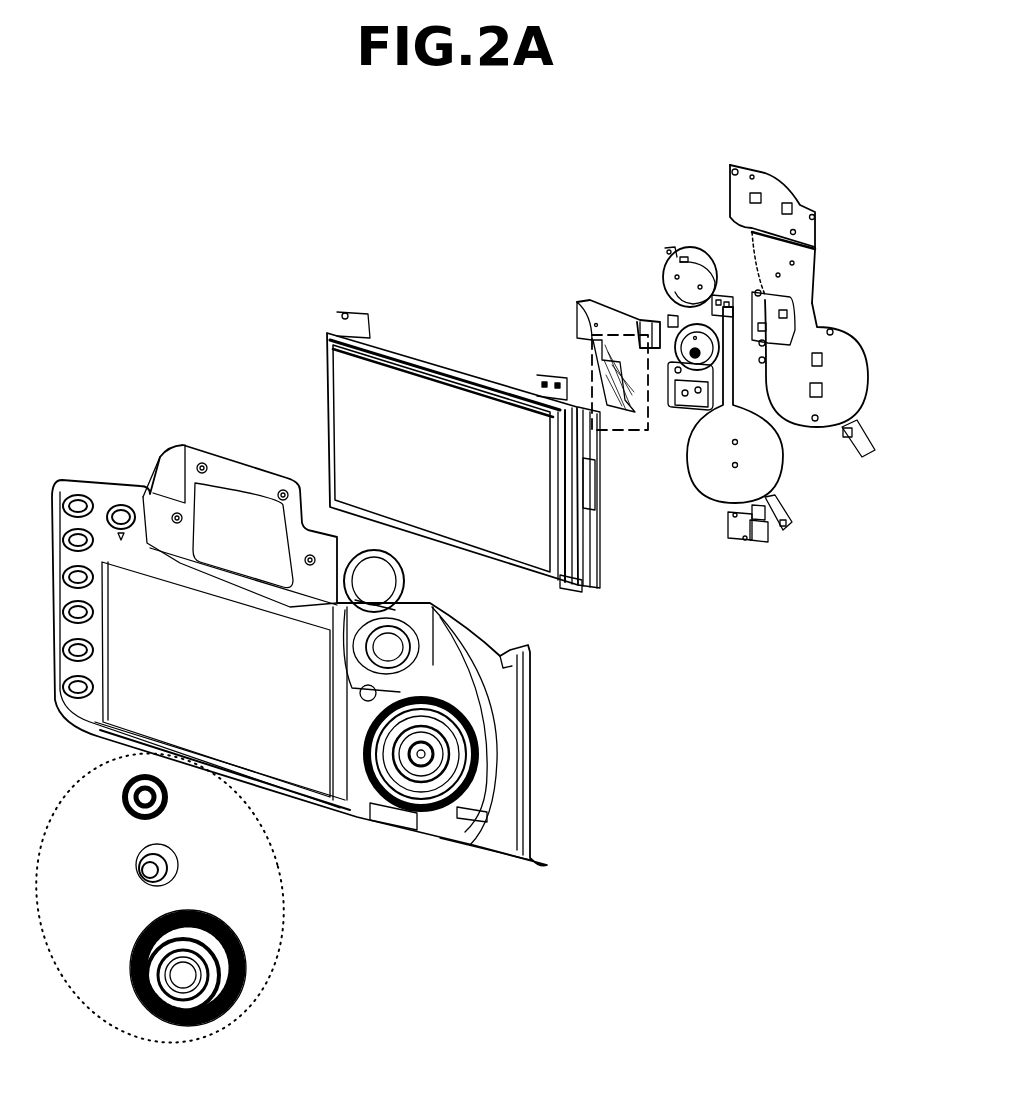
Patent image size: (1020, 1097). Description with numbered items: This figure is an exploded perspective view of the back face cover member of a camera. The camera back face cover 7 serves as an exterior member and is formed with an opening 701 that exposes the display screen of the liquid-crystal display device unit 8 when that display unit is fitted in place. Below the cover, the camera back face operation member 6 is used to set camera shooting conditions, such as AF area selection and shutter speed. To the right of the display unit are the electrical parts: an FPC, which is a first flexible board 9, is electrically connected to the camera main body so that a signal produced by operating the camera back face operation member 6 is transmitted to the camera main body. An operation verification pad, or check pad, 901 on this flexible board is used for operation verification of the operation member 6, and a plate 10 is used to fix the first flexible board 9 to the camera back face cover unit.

The camera back face operation member 6 is at (270, 953).
The camera back face cover 7 is at (517, 777).
The liquid-crystal display device unit 8 is at (557, 533).
The FPC (first flexible board) 9 is at (768, 475).
The plate 10 is at (803, 265).
The opening 701 is at (108, 525).
The operation verification pad (check pad) 901 is at (577, 303).